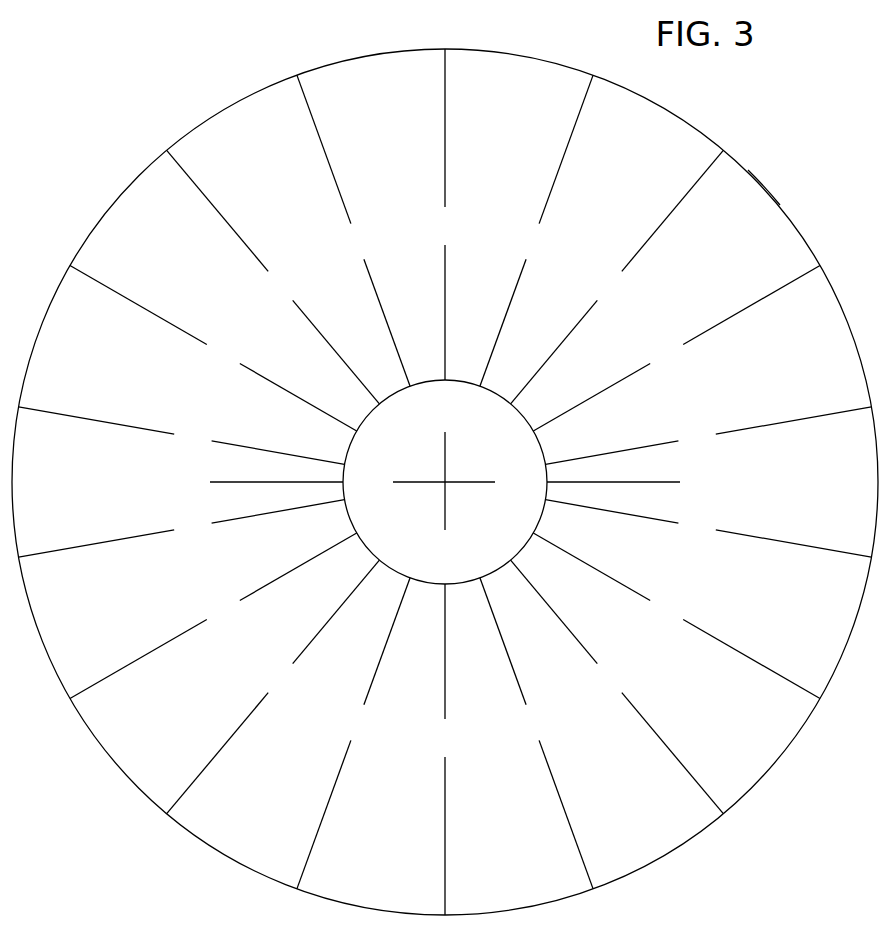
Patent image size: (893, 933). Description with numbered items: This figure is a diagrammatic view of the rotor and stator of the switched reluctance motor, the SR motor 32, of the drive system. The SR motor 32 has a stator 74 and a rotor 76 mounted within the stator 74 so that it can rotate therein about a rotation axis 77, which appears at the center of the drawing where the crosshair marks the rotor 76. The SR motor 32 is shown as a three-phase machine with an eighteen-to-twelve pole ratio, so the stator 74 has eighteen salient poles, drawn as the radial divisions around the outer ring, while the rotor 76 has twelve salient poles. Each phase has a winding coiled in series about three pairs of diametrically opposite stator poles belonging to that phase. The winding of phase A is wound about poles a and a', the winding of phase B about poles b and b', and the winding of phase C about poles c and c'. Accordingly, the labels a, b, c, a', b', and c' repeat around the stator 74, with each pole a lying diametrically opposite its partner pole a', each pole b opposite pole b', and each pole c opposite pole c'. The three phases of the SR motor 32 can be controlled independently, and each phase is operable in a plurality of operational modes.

The SR motor 32 is at (748, 137).
The stator 74 is at (748, 170).
The rotor 76 is at (548, 455).
The rotation axis 77 is at (445, 483).
The pole of phase A a is at (584, 331).
The pole of phase B b is at (676, 444).
The pole of phase C c is at (632, 378).
The pole of phase A a' is at (306, 629).
The pole of phase B b' is at (215, 519).
The pole of phase C c' is at (257, 584).